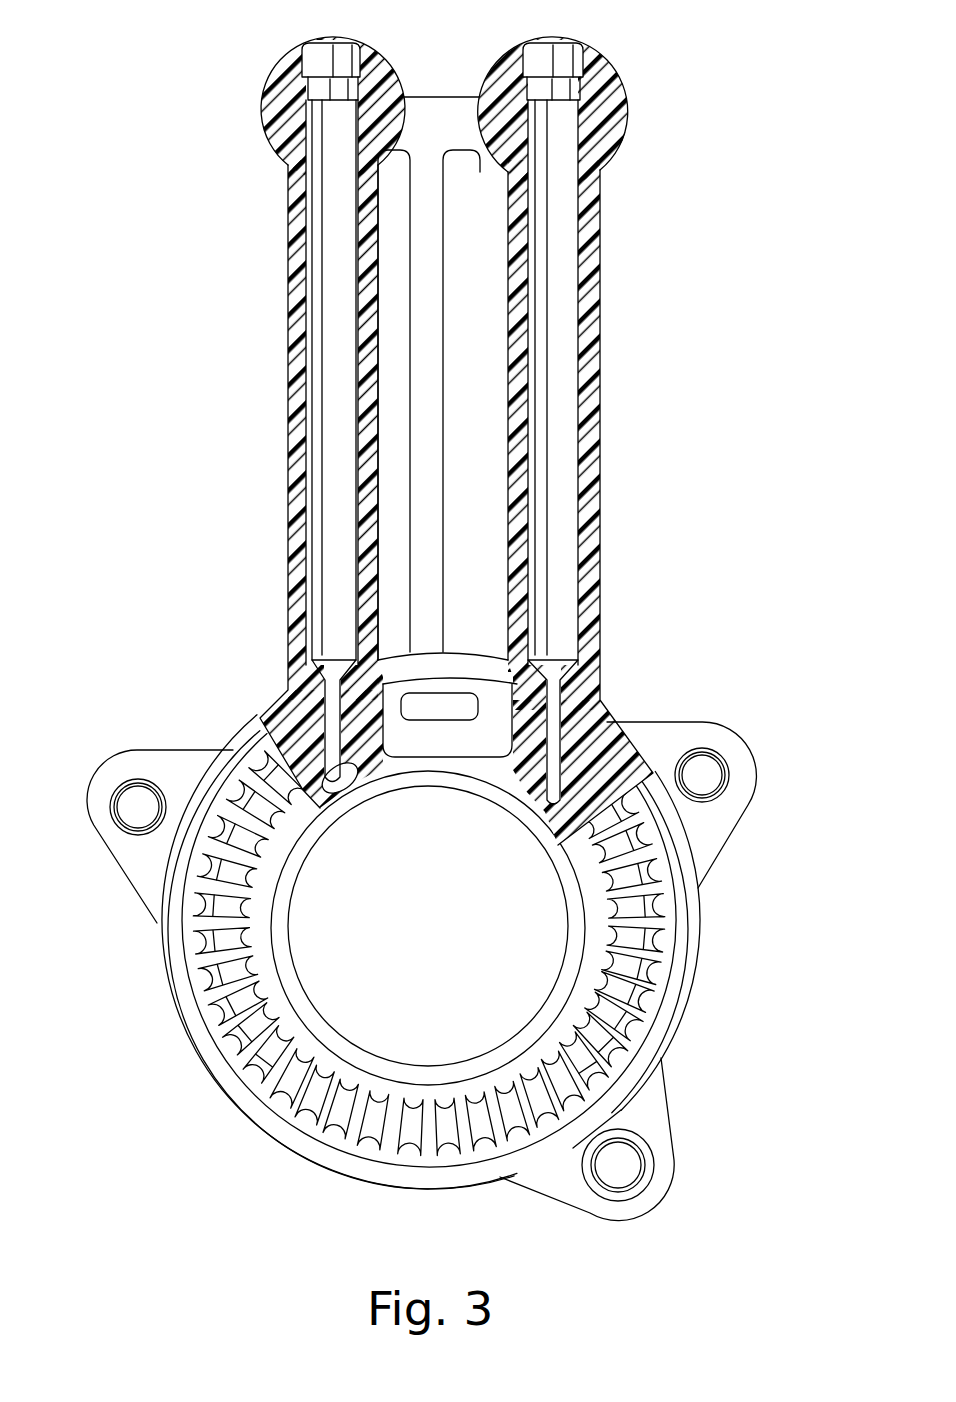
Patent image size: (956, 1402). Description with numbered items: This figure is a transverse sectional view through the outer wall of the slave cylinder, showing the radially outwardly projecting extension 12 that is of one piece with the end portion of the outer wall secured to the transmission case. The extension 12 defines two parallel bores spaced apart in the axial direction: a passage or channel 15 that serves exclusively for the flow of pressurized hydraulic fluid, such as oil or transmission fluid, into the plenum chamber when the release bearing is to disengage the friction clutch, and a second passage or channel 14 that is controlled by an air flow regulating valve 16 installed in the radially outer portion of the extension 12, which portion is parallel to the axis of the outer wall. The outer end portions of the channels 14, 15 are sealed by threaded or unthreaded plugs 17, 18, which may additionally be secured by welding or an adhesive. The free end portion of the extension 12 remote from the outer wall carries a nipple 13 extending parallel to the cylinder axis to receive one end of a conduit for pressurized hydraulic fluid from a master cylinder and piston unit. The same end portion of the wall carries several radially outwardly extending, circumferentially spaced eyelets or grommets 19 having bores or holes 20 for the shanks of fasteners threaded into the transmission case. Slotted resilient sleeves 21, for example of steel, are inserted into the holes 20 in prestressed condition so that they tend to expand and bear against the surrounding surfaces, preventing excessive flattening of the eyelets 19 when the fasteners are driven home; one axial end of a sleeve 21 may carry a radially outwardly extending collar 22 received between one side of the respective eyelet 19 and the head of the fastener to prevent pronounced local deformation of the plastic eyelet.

The extension 12 is at (612, 414).
The nipple 13 is at (283, 100).
The second passage or channel 14 is at (563, 332).
The passage or channel 15 is at (327, 338).
The air flow regulating valve 16 is at (617, 103).
The plug 17 is at (560, 60).
The plug 18 is at (318, 62).
The eyelet 19 is at (738, 745).
The bore or hole 20 is at (710, 768).
The slotted resilient sleeve 21 is at (718, 797).
The collar 22 is at (643, 1138).